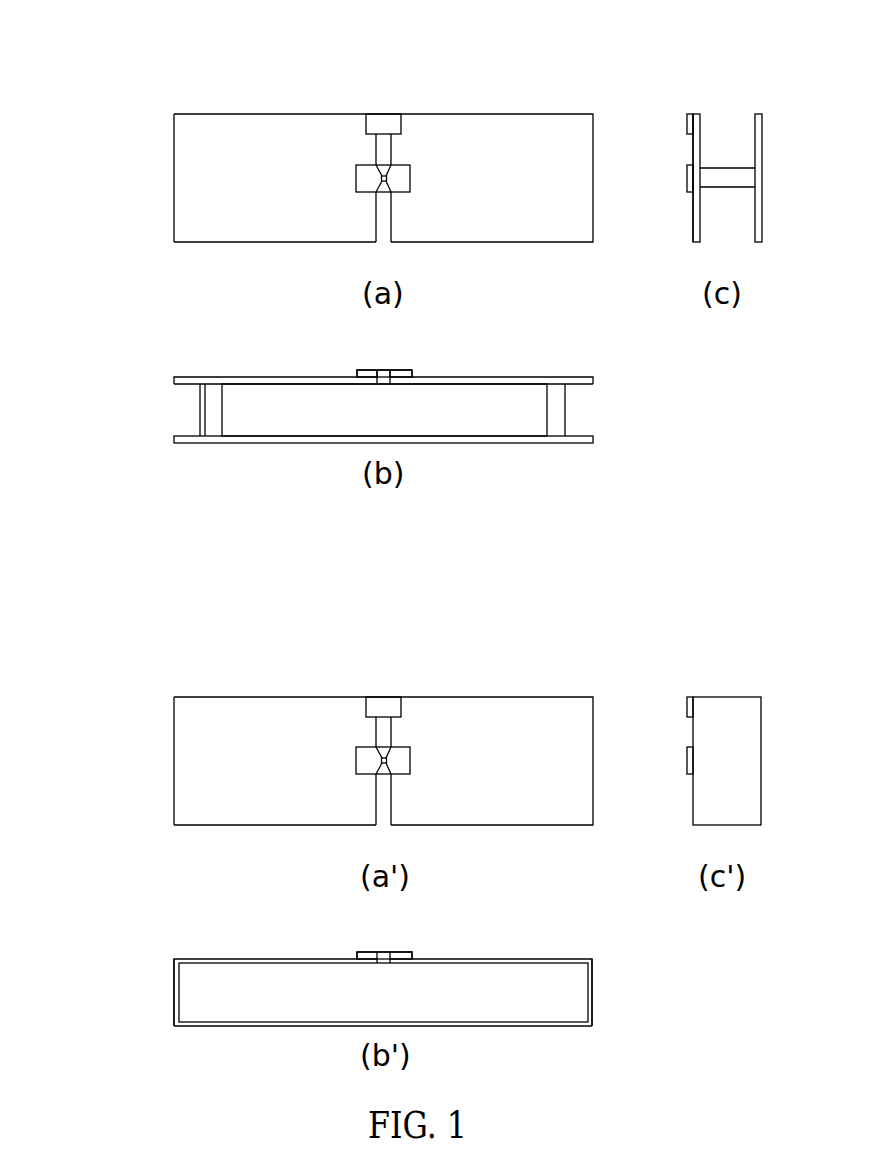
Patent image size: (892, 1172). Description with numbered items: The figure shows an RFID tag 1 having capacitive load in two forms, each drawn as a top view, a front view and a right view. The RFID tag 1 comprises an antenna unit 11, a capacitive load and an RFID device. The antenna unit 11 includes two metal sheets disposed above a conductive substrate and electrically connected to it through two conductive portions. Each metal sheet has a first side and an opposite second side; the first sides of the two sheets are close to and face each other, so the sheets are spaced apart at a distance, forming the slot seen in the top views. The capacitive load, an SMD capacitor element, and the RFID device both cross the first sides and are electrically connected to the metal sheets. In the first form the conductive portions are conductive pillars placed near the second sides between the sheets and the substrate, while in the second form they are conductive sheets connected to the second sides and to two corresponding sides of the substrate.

The RFID tag having capacitive load 1 is at (118, 90).
The antenna unit 11 is at (110, 360).